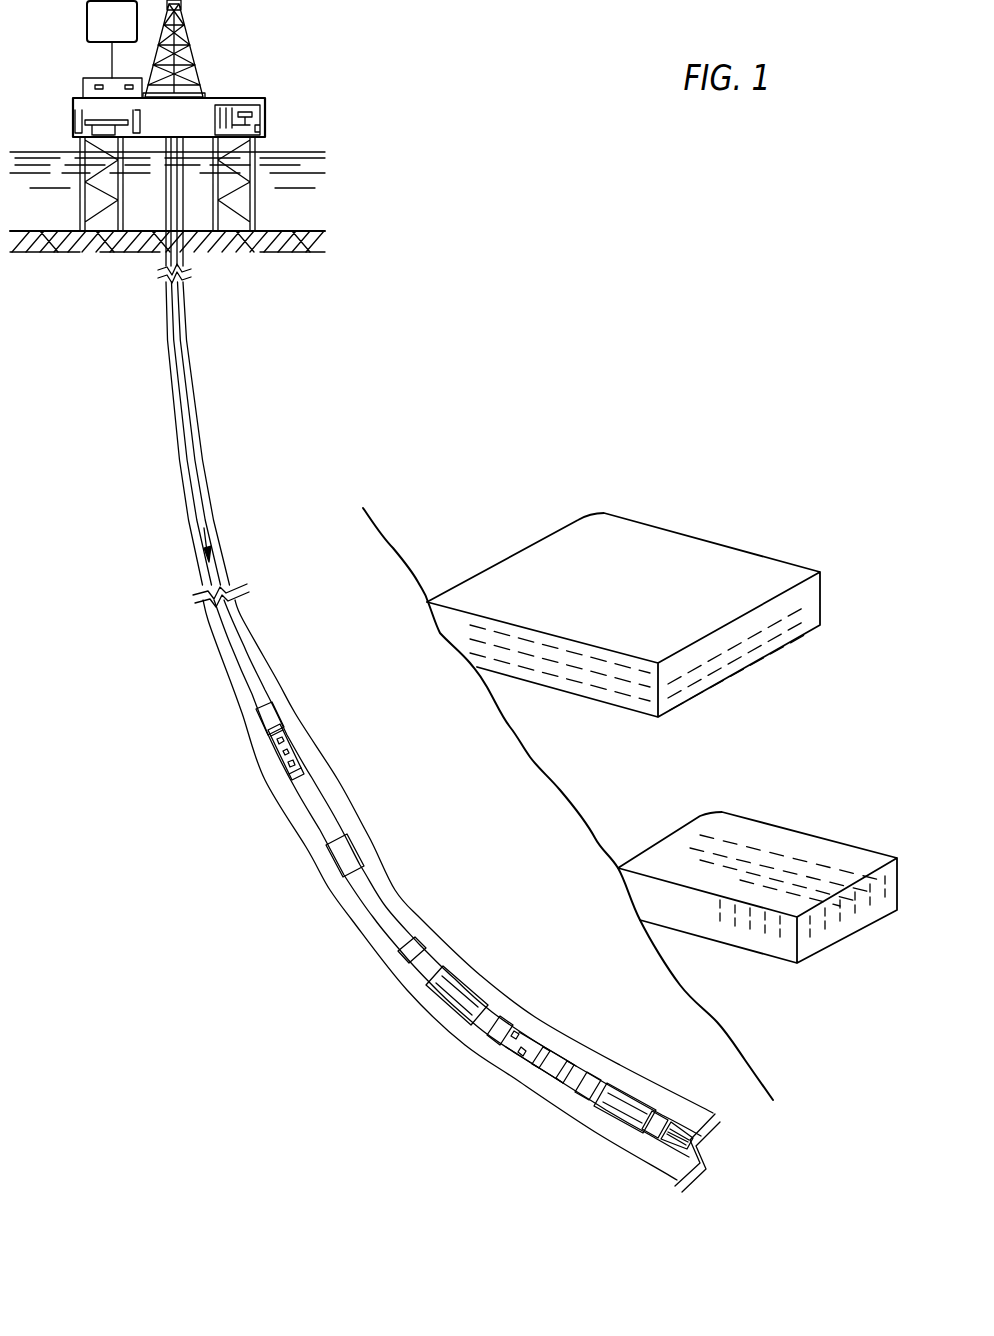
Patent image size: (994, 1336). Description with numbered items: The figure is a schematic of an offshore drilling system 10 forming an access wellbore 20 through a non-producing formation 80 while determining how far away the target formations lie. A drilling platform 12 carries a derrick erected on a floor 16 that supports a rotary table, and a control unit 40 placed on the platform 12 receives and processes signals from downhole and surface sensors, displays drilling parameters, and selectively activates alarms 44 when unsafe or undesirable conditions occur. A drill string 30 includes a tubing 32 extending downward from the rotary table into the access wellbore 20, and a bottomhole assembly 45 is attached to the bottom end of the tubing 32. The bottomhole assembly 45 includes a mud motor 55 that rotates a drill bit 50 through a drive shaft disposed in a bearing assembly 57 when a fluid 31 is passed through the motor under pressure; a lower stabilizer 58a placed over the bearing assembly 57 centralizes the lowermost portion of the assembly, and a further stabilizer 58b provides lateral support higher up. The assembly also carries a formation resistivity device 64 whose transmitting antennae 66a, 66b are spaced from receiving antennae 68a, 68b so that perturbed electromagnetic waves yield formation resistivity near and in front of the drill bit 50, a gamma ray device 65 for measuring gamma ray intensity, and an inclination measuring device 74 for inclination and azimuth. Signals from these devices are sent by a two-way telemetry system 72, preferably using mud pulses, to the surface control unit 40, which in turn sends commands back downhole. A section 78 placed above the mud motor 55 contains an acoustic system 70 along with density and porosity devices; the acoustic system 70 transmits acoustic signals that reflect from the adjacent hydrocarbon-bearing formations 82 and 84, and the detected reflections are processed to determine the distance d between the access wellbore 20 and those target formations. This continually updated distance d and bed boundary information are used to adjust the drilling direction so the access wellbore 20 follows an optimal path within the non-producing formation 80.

The drilling system 10 is at (333, 38).
The drilling platform 12 is at (192, 50).
The floor 16 is at (252, 98).
The access wellbore 20 is at (176, 420).
The drill string 30 is at (185, 393).
The fluid 31 is at (212, 540).
The tubing 32 is at (183, 471).
The control unit 40 is at (96, 78).
The alarms 44 is at (100, 32).
The bottomhole assembly 45 is at (412, 996).
The drill bit 50 is at (662, 1156).
The mud motor 55 is at (385, 902).
The bearing assembly 57 is at (648, 1100).
The lower stabilizer 58a is at (628, 1090).
The stabilizer 58b is at (470, 960).
The formation resistivity device 64 is at (528, 1022).
The gamma ray device 65 is at (537, 1060).
The transmitting antenna 66a is at (511, 1037).
The transmitting antenna 66b is at (520, 1055).
The receiving antenna 68a is at (584, 1077).
The receiving antenna 68b is at (501, 1010).
The acoustic system 70 is at (300, 762).
The telemetry system 72 is at (262, 731).
The inclination measuring device 74 is at (560, 1082).
The section 78 is at (266, 783).
The non-producing formation 80 is at (311, 620).
The producing formation 82 is at (580, 568).
The producing formation 84 is at (708, 848).
The distance d is at (538, 1016).